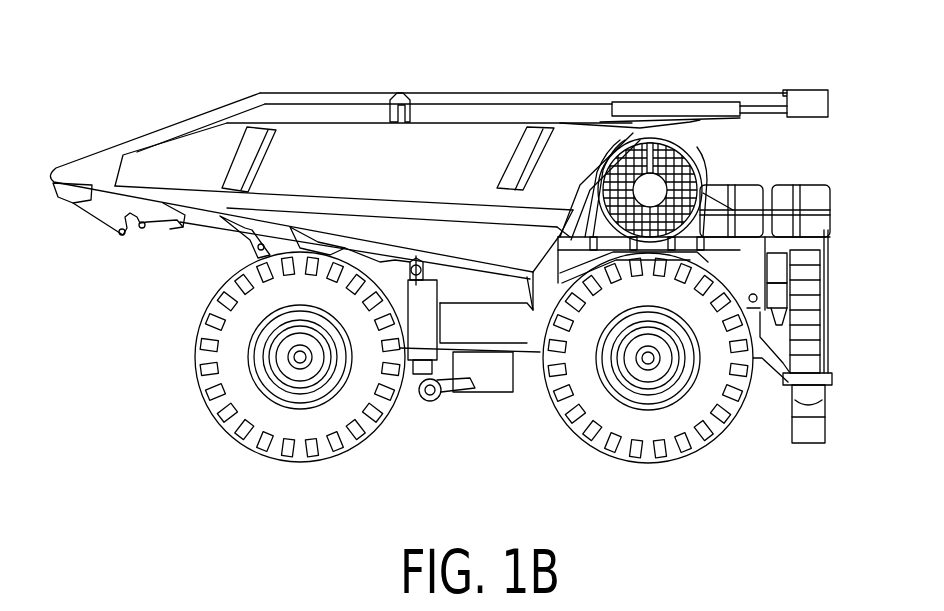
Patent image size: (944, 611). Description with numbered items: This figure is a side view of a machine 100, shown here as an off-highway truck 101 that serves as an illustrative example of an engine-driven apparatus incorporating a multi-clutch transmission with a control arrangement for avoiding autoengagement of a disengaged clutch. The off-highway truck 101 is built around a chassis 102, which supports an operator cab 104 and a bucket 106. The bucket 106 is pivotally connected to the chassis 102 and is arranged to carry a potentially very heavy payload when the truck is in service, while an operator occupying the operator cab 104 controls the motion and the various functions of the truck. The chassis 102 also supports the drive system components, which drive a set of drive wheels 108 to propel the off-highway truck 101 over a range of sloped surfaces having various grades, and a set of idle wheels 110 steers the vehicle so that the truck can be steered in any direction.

The machine 100 is at (737, 80).
The off-highway truck 101 is at (174, 289).
The chassis 102 is at (540, 335).
The operator cab 104 is at (707, 160).
The bucket 106 is at (318, 112).
The drive wheels 108 is at (338, 410).
The idle wheels 110 is at (637, 415).